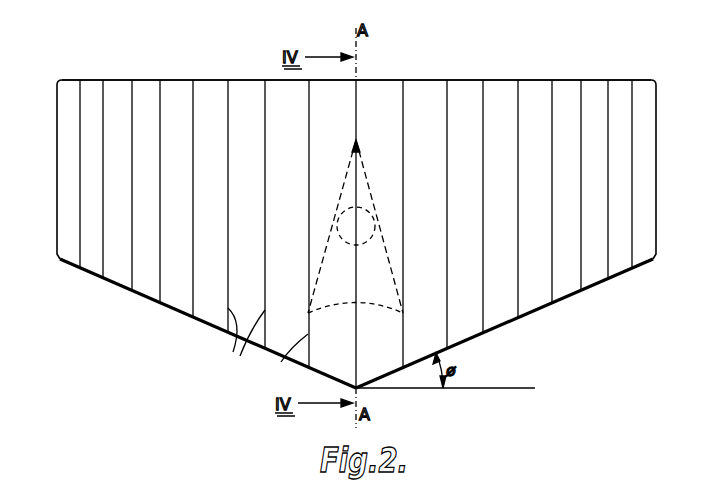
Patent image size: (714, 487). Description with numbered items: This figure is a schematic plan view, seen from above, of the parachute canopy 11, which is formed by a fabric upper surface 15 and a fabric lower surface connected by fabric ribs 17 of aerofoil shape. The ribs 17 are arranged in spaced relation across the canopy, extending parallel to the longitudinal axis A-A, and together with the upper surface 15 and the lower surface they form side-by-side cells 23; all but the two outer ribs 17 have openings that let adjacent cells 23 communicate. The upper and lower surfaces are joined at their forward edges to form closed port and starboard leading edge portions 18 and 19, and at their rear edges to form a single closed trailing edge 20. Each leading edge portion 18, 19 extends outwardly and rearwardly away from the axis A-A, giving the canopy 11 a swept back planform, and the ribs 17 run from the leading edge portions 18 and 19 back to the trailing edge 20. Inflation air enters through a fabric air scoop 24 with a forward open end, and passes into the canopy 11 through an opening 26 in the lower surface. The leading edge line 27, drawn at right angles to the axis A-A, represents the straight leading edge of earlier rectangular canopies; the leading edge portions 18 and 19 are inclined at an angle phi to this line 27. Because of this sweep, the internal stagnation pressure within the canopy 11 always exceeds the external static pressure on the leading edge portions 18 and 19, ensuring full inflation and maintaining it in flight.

The canopy 11 is at (556, 306).
The fabric upper surface 15 is at (473, 183).
The fabric ribs 17 is at (263, 347).
The port leading edge portion 18 is at (503, 329).
The starboard leading edge portion 19 is at (205, 330).
The closed trailing edge 20 is at (438, 80).
The side-by-side cells 23 is at (205, 106).
The fabric air scoop 24 is at (336, 238).
The opening 26 is at (366, 220).
The leading edge line 27 is at (497, 389).